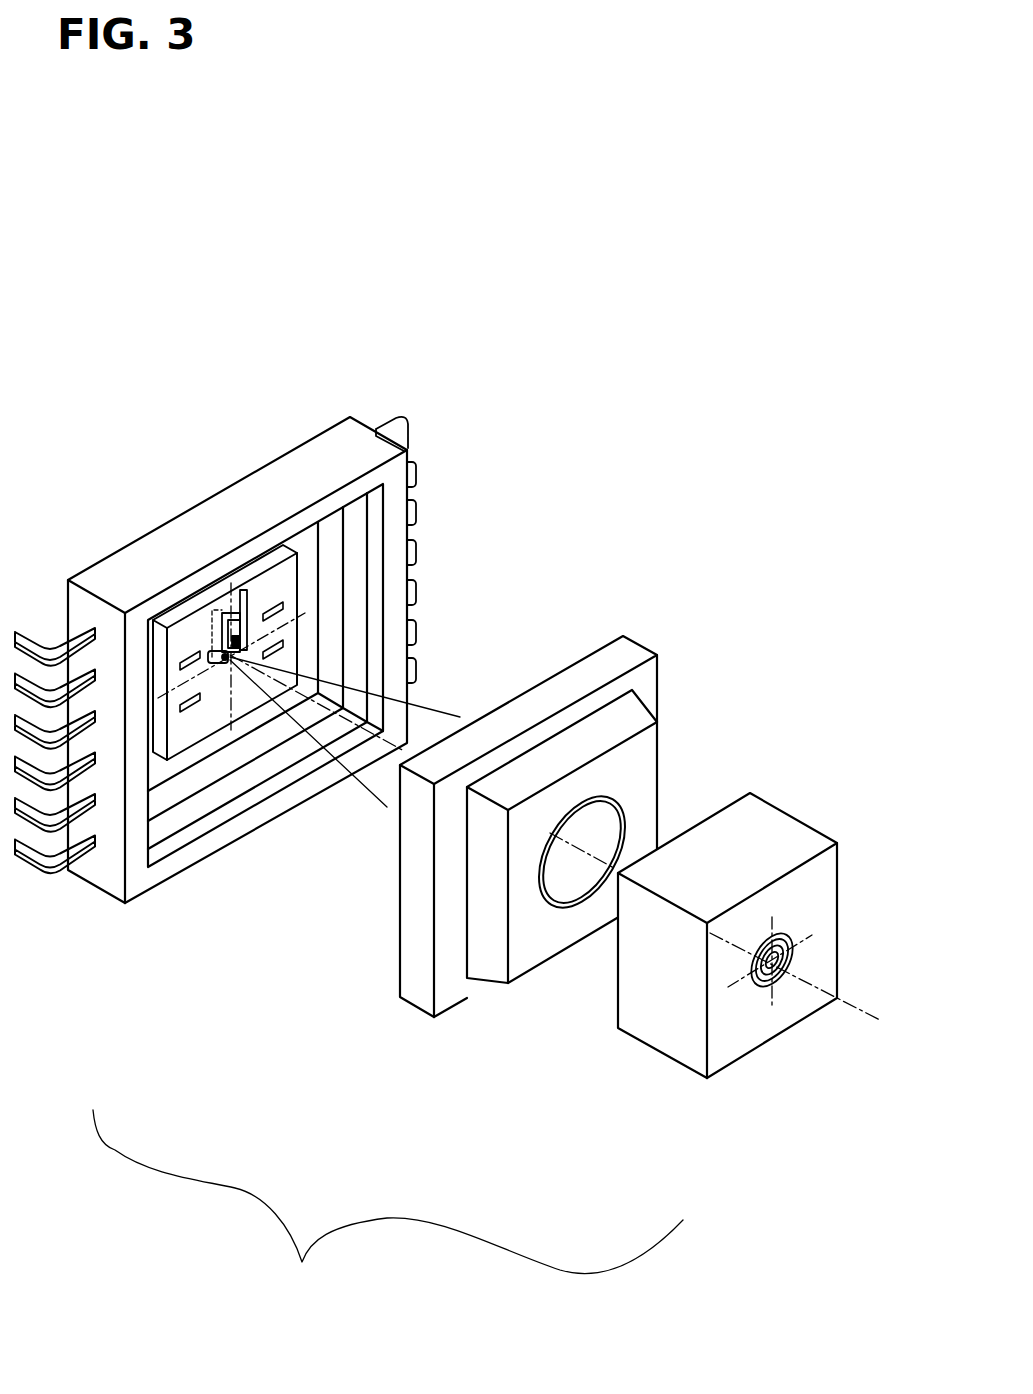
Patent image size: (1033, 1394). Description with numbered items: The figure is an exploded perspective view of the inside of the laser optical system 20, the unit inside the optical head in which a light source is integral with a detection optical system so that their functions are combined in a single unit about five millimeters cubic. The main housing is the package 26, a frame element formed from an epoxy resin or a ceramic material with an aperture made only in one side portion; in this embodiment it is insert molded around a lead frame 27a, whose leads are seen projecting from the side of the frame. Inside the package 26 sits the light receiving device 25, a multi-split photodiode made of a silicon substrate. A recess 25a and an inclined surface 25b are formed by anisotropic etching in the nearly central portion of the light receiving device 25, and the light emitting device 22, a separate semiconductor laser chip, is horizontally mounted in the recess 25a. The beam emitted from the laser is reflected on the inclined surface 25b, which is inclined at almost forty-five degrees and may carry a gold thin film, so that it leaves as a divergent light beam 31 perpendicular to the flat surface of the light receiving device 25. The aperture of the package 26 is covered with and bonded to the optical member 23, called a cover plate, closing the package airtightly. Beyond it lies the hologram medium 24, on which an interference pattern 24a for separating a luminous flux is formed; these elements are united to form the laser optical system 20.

The laser optical system 20 is at (388, 1215).
The light emitting device 22 is at (250, 599).
The optical member 23 is at (423, 987).
The hologram medium 24 is at (772, 813).
The interference pattern 24a is at (763, 990).
The light receiving device 25 is at (210, 717).
The recess 25a is at (222, 612).
The inclined surface 25b is at (246, 662).
The package 26 is at (242, 500).
The lead frame 27a is at (48, 863).
The divergent light beam 31 is at (437, 707).